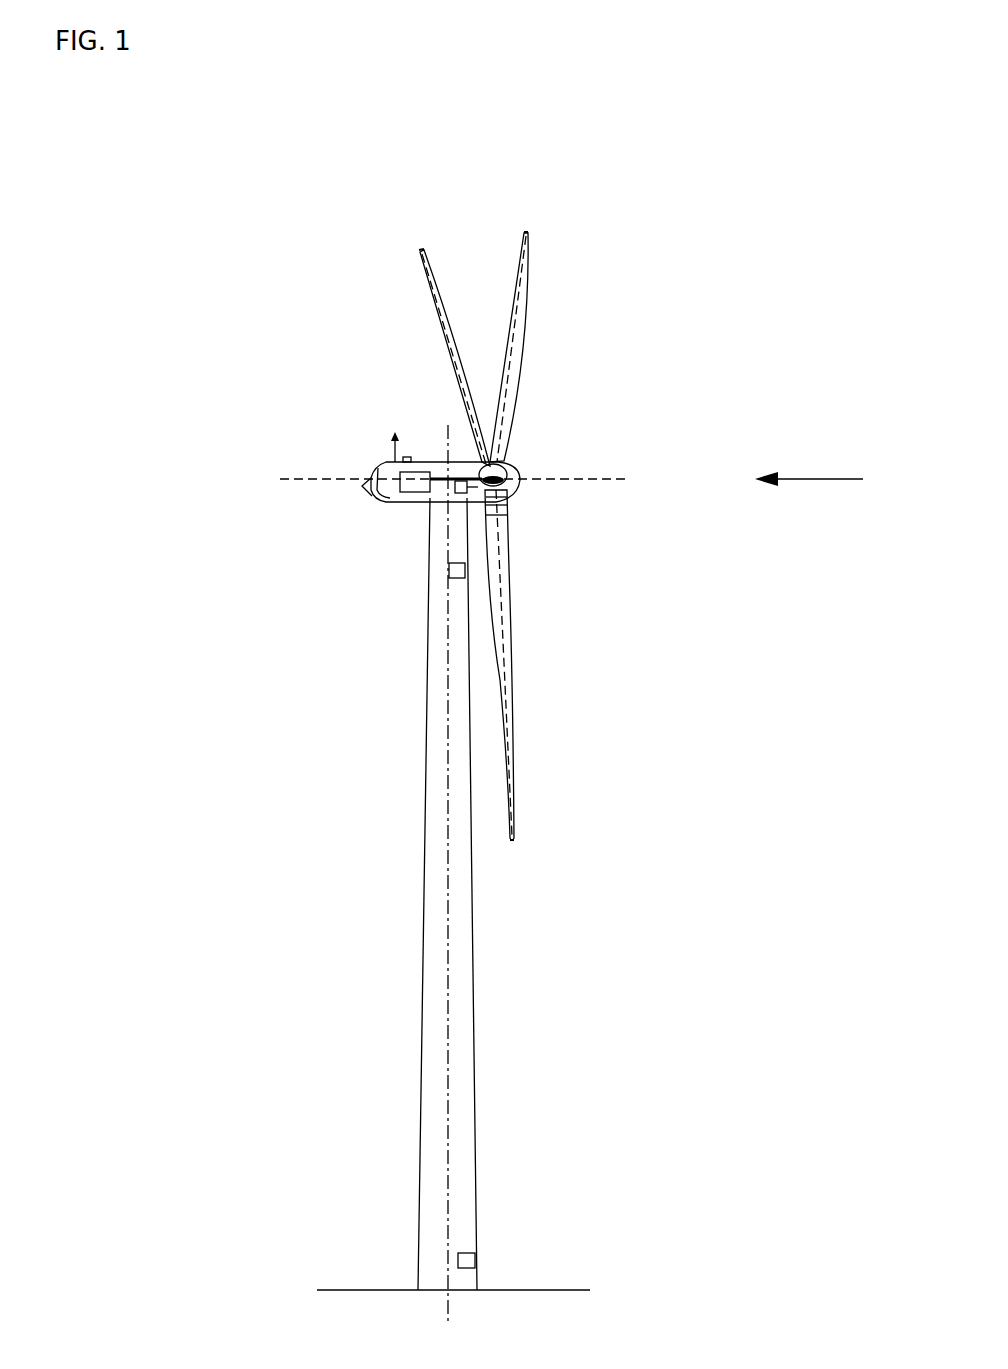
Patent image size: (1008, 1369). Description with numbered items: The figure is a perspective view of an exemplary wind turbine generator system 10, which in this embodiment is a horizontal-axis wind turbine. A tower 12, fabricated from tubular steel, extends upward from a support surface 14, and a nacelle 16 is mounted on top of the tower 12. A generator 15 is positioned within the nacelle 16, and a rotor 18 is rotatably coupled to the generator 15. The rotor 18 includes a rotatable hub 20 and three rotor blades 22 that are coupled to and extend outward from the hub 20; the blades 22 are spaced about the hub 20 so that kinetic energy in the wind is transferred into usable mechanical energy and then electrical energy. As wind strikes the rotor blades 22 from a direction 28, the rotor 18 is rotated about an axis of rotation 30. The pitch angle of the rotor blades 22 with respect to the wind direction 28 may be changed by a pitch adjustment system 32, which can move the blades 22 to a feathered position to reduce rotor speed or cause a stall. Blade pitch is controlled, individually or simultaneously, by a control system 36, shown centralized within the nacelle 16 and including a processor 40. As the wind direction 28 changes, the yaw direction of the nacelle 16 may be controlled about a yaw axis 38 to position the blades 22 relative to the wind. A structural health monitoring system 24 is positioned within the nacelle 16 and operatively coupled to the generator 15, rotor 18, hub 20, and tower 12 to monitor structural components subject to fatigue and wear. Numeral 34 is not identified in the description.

The wind turbine generator system 10 is at (203, 266).
The tower 12 is at (420, 1055).
The support surface 14 is at (375, 1290).
The generator 15 is at (407, 457).
The nacelle 16 is at (398, 502).
The rotor 18 is at (524, 382).
The rotatable hub 20 is at (508, 472).
The rotor blade 22 is at (445, 320).
The structural health monitoring system 24 is at (378, 470).
The direction 28 is at (830, 479).
The axis of rotation 30 is at (585, 480).
The pitch adjustment system 32 is at (488, 540).
The blade tip 34 is at (418, 256).
The control system 36 is at (455, 497).
The yaw axis 38 is at (449, 992).
The processor 40 is at (448, 490).